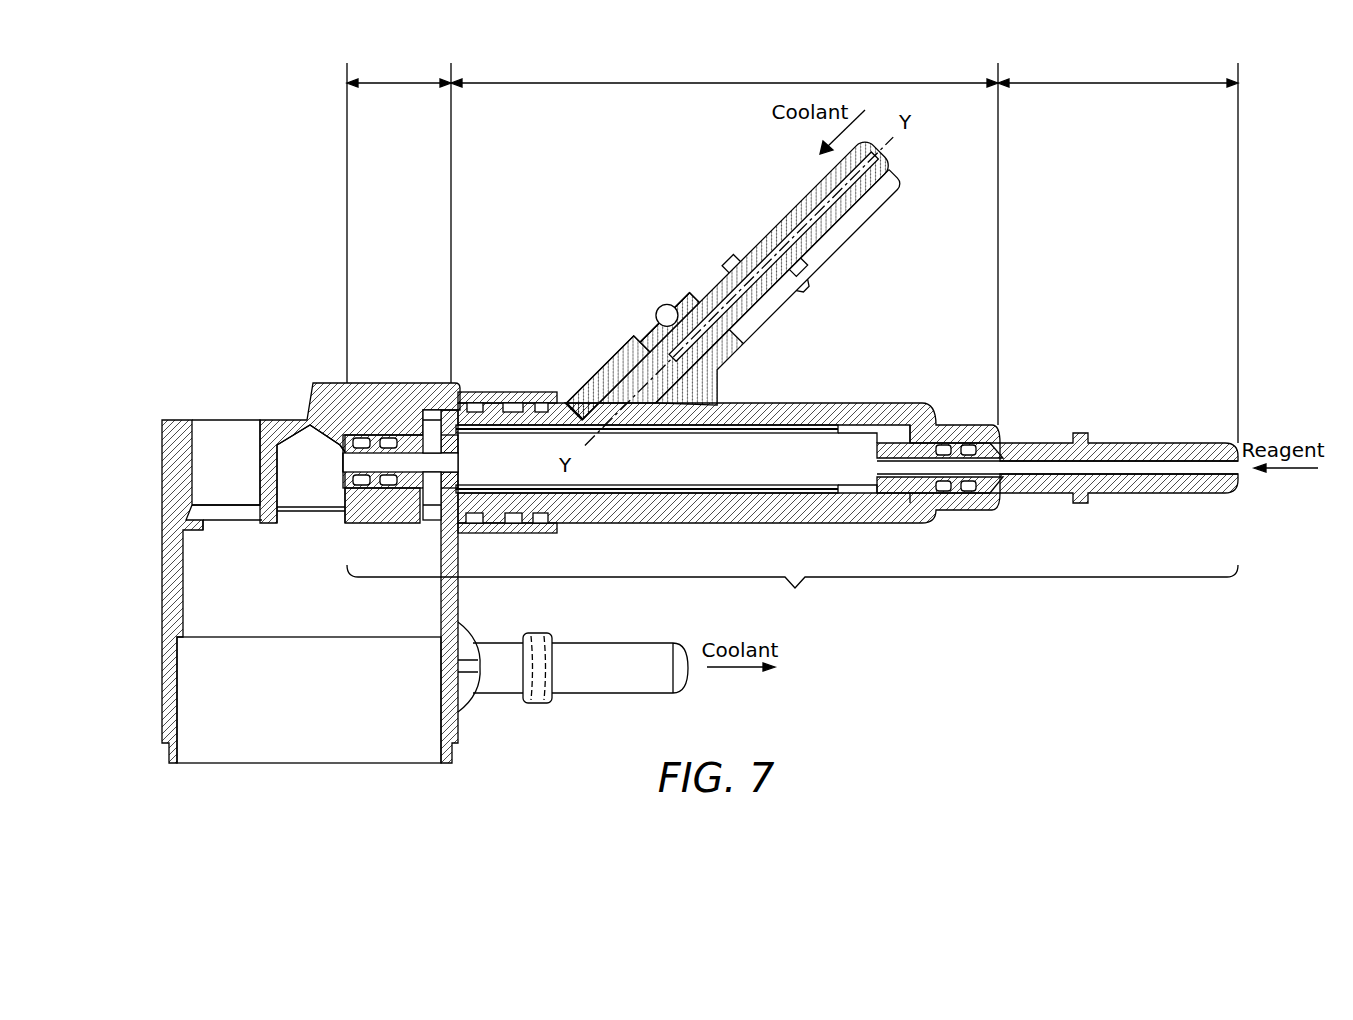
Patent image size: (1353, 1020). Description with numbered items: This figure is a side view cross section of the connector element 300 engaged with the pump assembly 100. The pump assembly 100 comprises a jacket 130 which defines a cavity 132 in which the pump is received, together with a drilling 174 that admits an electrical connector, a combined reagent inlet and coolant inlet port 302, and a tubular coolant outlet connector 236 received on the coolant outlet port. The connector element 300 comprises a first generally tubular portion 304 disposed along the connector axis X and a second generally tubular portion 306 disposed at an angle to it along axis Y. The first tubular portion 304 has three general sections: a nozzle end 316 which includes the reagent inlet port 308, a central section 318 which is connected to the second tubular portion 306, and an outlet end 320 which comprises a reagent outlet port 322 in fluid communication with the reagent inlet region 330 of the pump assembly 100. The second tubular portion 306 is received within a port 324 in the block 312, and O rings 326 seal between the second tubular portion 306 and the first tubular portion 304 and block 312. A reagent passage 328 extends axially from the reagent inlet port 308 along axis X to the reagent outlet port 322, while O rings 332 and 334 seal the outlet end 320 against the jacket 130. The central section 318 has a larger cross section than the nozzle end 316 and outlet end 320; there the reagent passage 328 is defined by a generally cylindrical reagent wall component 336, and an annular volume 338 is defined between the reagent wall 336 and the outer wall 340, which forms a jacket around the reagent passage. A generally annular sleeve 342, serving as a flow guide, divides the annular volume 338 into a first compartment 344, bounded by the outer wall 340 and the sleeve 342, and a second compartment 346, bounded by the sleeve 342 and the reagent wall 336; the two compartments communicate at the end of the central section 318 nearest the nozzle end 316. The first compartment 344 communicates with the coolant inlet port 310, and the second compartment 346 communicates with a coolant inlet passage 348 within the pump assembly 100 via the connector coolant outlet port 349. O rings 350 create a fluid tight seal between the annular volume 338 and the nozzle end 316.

The pump assembly 100 is at (165, 392).
The jacket 130 is at (182, 604).
The cavity 132 is at (182, 692).
The drilling 174 is at (232, 420).
The tubular coolant outlet connector 236 is at (620, 684).
The connector element 300 is at (905, 682).
The combined reagent inlet and coolant inlet port 302 is at (470, 392).
The first tubular portion 304 is at (792, 590).
The second tubular portion 306 is at (806, 292).
The reagent inlet port 308 is at (1240, 472).
The coolant inlet port 310 is at (896, 152).
The block 312 is at (604, 372).
The nozzle end 316 is at (1118, 251).
The central section 318 is at (724, 242).
The outlet end 320 is at (399, 221).
The reagent outlet port 322 is at (343, 462).
The port 324 is at (648, 338).
The O rings 326 is at (657, 314).
The reagent passage 328 is at (790, 470).
The reagent inlet region 330 is at (310, 490).
The O rings 332 is at (478, 403).
The O rings 334 is at (362, 437).
The reagent wall component 336 is at (860, 493).
The annular volume 338 is at (880, 418).
The outer wall 340 is at (836, 404).
The annular sleeve 342 is at (793, 425).
The first compartment 344 is at (632, 494).
The second compartment 346 is at (580, 492).
The coolant inlet passage 348 is at (413, 420).
The connector coolant outlet port 349 is at (433, 410).
The O rings 350 is at (965, 446).